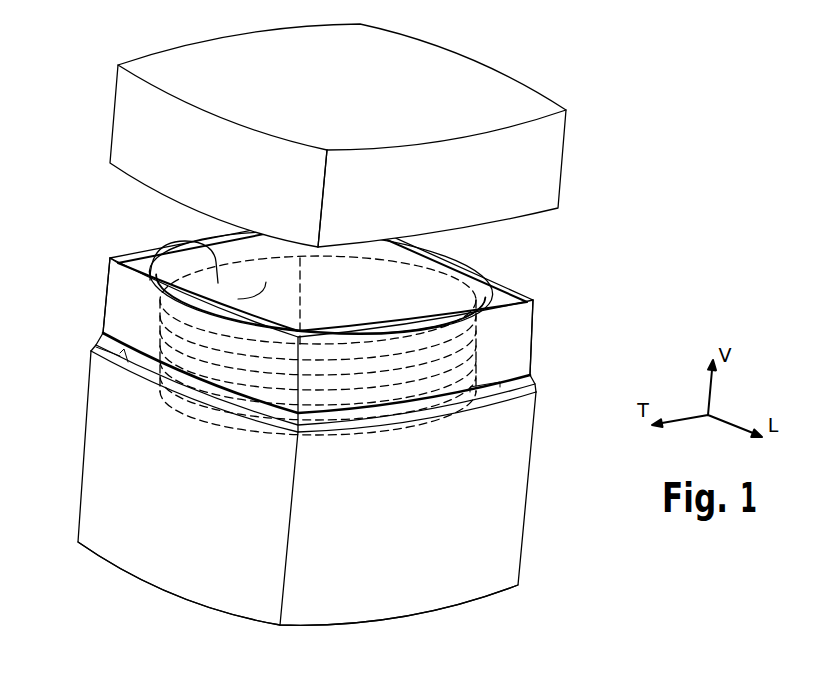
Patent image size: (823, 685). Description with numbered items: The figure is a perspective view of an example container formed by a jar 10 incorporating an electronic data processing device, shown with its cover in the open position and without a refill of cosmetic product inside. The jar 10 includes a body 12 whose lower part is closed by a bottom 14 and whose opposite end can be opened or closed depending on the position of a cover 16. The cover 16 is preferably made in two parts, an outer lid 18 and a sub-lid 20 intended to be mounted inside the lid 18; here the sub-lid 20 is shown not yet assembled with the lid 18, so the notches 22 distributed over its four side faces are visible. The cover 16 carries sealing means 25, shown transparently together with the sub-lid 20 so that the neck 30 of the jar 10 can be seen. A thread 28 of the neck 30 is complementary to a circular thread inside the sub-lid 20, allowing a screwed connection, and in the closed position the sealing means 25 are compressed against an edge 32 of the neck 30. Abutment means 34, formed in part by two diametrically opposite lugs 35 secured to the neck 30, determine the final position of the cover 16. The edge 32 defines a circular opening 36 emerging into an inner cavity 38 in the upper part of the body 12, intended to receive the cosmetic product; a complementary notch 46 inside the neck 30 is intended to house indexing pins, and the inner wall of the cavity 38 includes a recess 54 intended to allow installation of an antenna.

The jar 10 is at (607, 100).
The body 12 is at (492, 508).
The bottom 14 is at (422, 620).
The cover 16 is at (480, 52).
The lid 18 is at (540, 172).
The sub-lid 20 is at (514, 326).
The notches 22 is at (482, 392).
The sealing means 25 is at (497, 300).
The thread 28 is at (140, 309).
The neck 30 is at (256, 382).
The edge 32 is at (108, 256).
The abutment means 34 is at (124, 380).
The lugs 35 is at (115, 342).
The circular opening 36 is at (415, 298).
The inner cavity 38 is at (346, 302).
The notch 46 is at (245, 231).
The recess 54 is at (238, 299).